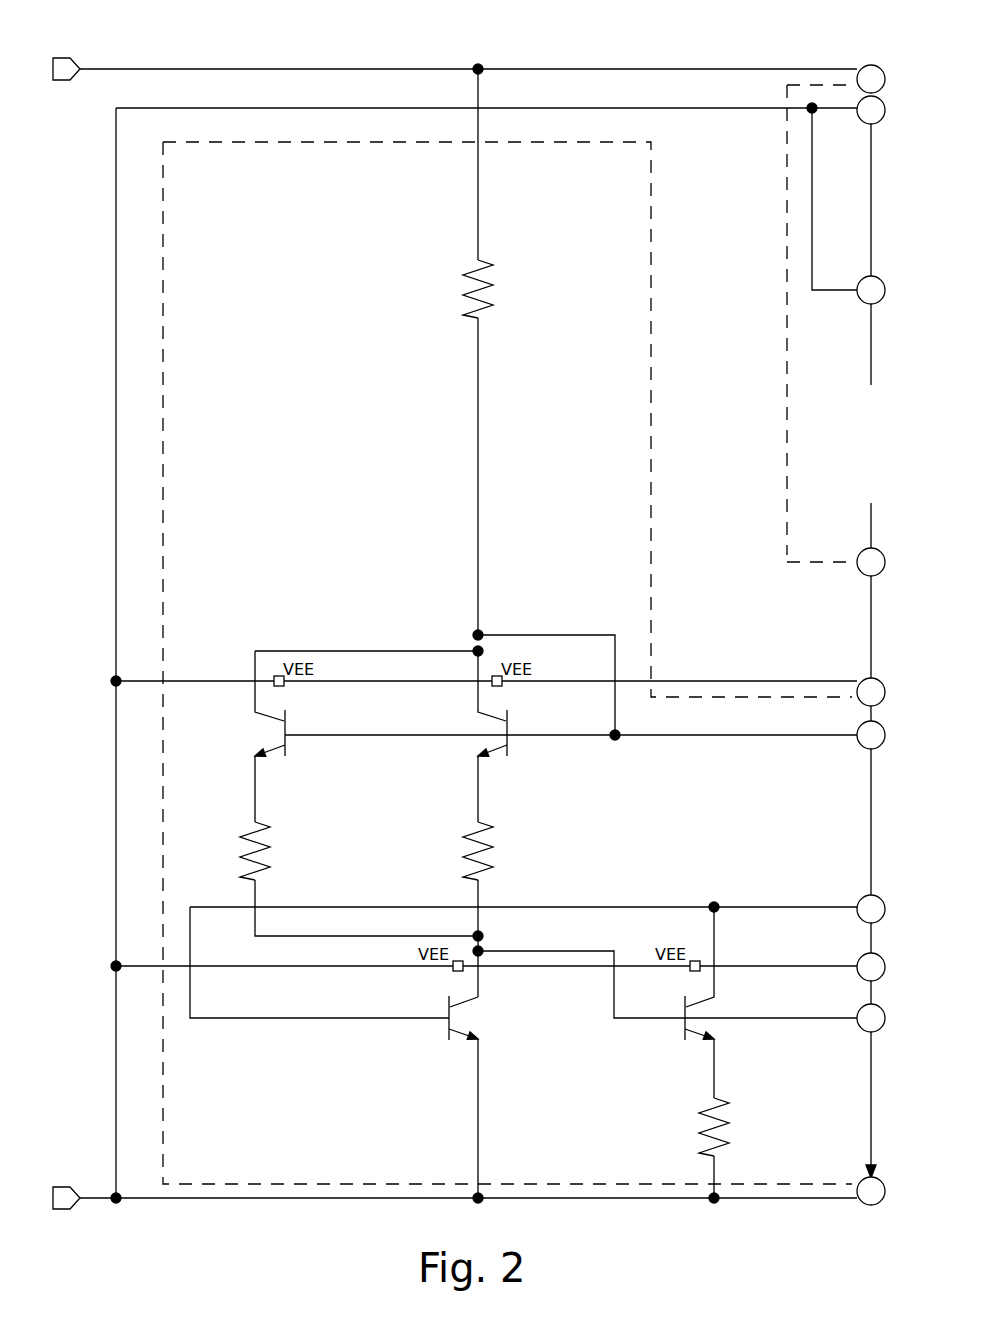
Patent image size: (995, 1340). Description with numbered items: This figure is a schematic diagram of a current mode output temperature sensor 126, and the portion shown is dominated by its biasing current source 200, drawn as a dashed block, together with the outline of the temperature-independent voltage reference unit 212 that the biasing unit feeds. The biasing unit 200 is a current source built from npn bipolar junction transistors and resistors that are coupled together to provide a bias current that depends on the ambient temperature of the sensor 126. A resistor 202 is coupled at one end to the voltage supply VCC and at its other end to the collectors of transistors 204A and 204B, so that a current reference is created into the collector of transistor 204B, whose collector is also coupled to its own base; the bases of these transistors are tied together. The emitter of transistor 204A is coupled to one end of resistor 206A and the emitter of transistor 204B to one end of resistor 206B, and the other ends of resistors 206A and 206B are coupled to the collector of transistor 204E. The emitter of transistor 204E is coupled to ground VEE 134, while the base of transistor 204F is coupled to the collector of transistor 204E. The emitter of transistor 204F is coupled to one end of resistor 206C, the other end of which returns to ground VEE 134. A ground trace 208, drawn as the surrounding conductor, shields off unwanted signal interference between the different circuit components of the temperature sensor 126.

The current mode output temperature sensor 126 is at (173, 26).
The ground VEE 134 is at (768, 1200).
The biasing current source 200 is at (651, 243).
The resistor 202 is at (489, 303).
The transistor 204A is at (291, 750).
The transistor 204B is at (513, 750).
The transistor 204E is at (447, 1040).
The transistor 204F is at (684, 1040).
The resistor 206A is at (273, 855).
The resistor 206B is at (495, 855).
The resistor 206C is at (735, 1135).
The ground trace 208 is at (728, 110).
The temperature-independent voltage reference unit 212 is at (787, 345).